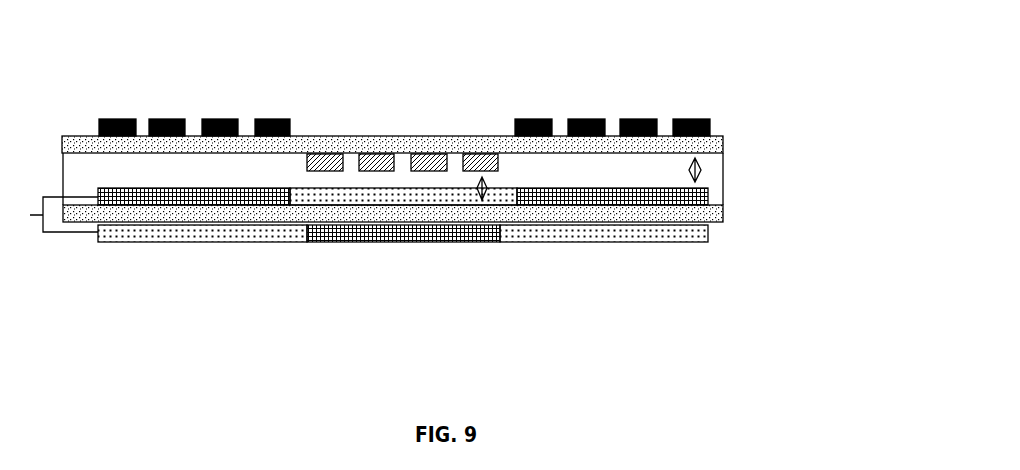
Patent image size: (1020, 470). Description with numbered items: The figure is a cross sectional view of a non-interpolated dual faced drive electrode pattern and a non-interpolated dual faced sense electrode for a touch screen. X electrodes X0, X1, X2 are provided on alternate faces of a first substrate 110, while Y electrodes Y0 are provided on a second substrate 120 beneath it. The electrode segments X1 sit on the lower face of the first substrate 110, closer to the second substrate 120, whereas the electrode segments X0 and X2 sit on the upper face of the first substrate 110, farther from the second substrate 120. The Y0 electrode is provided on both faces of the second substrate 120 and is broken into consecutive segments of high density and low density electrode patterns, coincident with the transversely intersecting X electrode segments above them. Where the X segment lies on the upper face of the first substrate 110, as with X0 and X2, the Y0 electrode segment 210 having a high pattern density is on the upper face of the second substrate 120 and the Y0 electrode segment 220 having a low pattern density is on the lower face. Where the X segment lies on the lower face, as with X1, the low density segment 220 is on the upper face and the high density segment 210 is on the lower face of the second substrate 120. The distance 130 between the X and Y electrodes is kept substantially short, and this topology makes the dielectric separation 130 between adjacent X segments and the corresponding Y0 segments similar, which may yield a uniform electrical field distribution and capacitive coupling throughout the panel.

The first substrate 110 is at (723, 137).
The second substrate 120 is at (725, 210).
The distance between the X and Y electrodes 130 is at (487, 188).
The Y0 electrode segment having a high pattern density 210 is at (153, 202).
The Y0 electrode segment having a low pattern density 220 is at (587, 242).
The X electrode segments X0 is at (118, 119).
The X electrode segments X1 is at (325, 154).
The X electrode segments X2 is at (533, 119).
The Y electrode Y0 is at (403, 270).